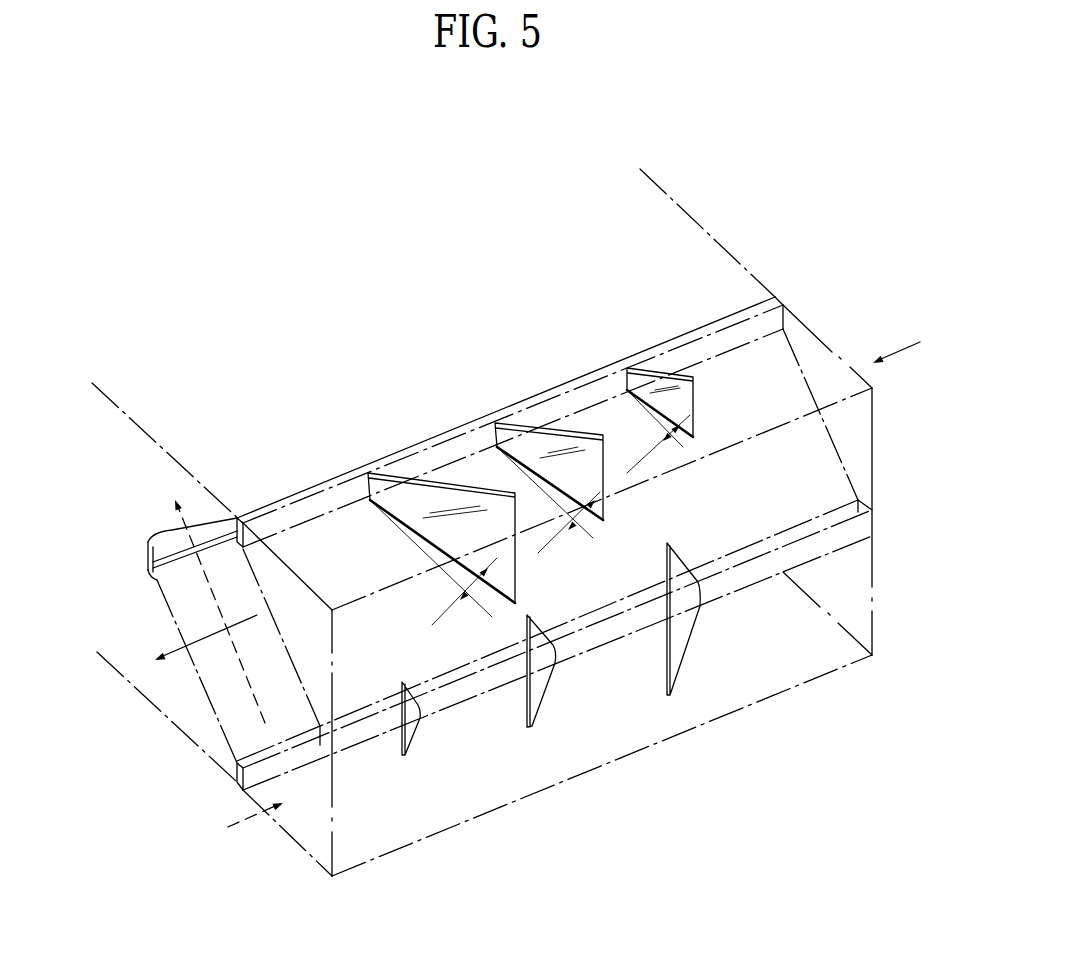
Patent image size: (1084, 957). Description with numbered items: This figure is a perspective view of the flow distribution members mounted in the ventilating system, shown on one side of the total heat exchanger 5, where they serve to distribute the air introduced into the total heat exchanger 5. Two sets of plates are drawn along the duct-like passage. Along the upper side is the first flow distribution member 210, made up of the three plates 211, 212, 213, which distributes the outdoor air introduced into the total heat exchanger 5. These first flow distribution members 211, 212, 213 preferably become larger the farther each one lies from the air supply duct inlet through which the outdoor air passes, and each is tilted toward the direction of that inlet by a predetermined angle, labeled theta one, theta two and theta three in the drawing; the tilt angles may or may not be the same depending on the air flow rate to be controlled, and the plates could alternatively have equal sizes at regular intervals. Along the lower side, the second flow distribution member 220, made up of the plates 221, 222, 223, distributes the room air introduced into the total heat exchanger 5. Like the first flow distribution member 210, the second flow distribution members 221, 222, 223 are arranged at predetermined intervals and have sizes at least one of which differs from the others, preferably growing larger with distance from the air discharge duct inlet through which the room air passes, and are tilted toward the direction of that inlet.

The total heat exchanger 5 is at (795, 352).
The first flow distribution member 210 is at (593, 307).
The first flow distribution member 211 is at (657, 380).
The first flow distribution member 212 is at (530, 437).
The first flow distribution member 213 is at (396, 494).
The second flow distribution member 220 is at (800, 757).
The second flow distribution member 221 is at (415, 723).
The second flow distribution member 222 is at (540, 687).
The second flow distribution member 223 is at (685, 635).